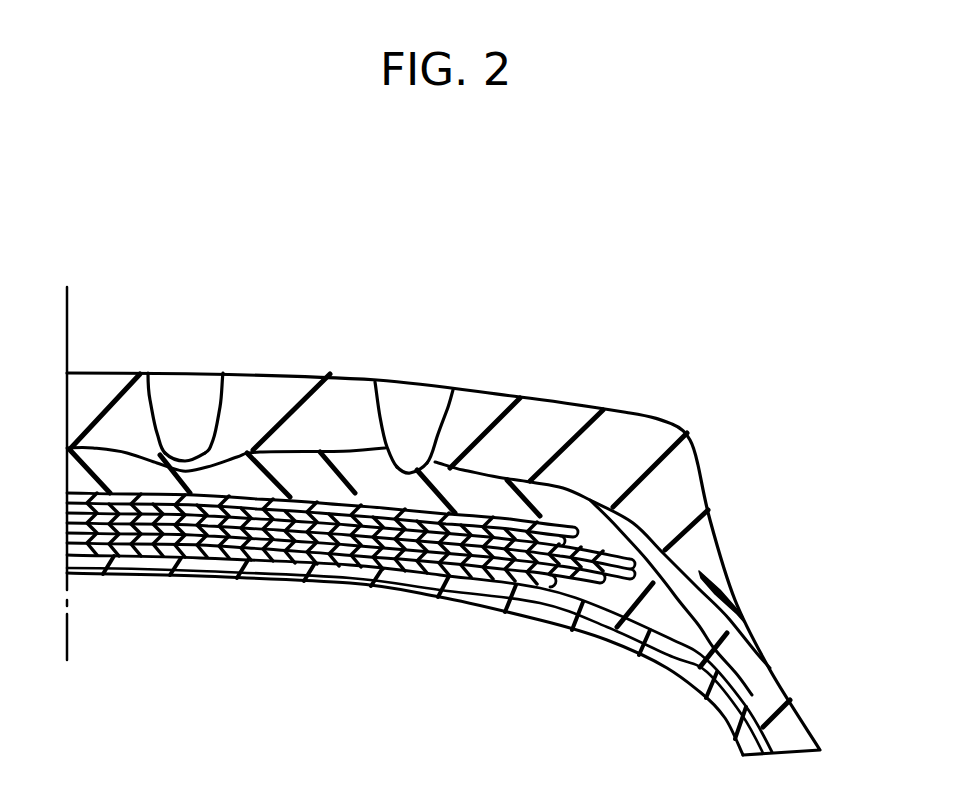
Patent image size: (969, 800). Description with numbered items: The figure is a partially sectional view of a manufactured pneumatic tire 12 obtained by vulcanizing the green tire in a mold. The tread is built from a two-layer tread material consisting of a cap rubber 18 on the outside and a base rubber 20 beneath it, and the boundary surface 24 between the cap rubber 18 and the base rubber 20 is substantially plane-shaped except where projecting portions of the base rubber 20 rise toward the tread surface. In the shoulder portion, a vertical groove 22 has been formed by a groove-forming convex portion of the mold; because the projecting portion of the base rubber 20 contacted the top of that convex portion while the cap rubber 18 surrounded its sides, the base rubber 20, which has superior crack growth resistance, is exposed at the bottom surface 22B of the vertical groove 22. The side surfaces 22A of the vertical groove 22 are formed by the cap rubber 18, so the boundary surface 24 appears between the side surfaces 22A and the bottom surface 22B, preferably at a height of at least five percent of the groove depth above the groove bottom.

The pneumatic tire 12 is at (717, 355).
The cap rubber 18 is at (680, 487).
The base rubber 20 is at (738, 607).
The vertical groove 22 is at (281, 345).
The side surfaces 22A is at (155, 398).
The bottom surface 22B is at (187, 455).
The boundary surface 24 is at (572, 491).